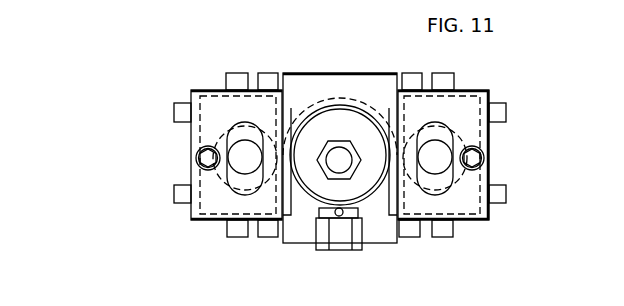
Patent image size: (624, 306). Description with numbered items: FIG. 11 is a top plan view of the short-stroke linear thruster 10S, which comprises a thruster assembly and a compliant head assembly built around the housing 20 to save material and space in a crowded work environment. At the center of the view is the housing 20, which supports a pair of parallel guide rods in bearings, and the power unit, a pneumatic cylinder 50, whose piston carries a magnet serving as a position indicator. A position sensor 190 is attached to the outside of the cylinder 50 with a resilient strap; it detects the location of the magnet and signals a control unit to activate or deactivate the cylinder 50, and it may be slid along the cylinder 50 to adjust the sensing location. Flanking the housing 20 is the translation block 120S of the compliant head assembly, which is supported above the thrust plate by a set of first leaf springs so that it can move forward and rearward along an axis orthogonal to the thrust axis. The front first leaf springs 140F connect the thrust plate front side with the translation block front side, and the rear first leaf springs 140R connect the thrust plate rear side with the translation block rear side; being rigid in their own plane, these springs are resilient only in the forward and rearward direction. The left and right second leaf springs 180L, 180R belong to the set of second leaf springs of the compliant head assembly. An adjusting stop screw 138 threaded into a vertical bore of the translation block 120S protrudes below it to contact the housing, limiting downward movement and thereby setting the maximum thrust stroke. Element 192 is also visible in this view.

The thruster 10S is at (514, 106).
The translation block 120S is at (150, 119).
The housing 20 is at (293, 233).
The pneumatic cylinder 50 is at (357, 188).
The adjusting stop screw 138 is at (196, 172).
The rear first leaf springs 140R is at (218, 88).
The front first leaf springs 140F is at (217, 225).
The left second leaf spring 180L is at (190, 137).
The right second leaf spring 180R is at (493, 135).
The position sensor 190 is at (317, 247).
The ring 192 is at (380, 108).